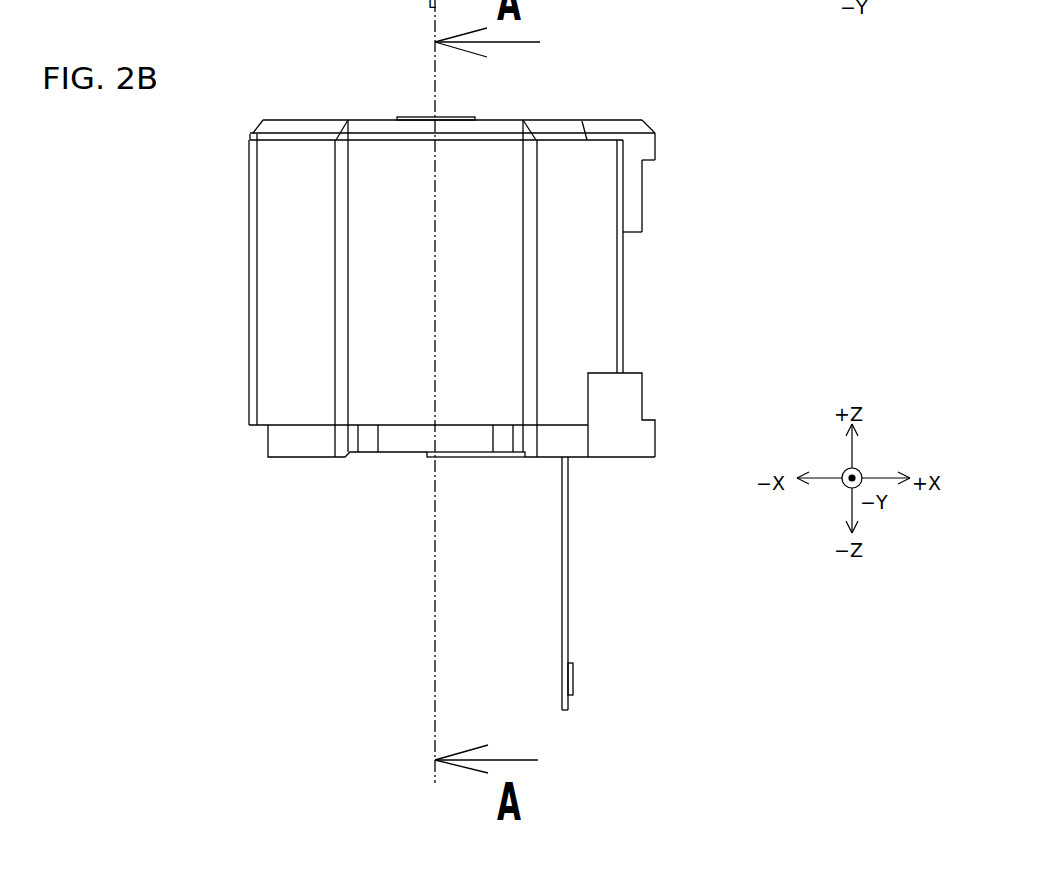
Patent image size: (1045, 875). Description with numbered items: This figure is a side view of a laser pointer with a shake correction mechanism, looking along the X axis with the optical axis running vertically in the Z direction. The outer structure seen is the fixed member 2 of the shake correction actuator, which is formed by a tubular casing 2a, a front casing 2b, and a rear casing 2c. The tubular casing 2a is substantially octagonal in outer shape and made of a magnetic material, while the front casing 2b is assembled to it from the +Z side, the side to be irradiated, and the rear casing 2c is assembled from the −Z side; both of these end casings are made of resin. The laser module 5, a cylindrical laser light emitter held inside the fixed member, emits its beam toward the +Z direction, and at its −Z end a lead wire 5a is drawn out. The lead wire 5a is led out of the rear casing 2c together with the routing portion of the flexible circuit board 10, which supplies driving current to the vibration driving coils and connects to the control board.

The fixed member 2 is at (145, 143).
The tubular casing 2a is at (275, 292).
The front casing 2b is at (255, 123).
The rear casing 2c is at (280, 443).
The laser module 5 is at (416, 117).
The lead wire 5a is at (562, 648).
The flexible circuit board 10 is at (568, 592).